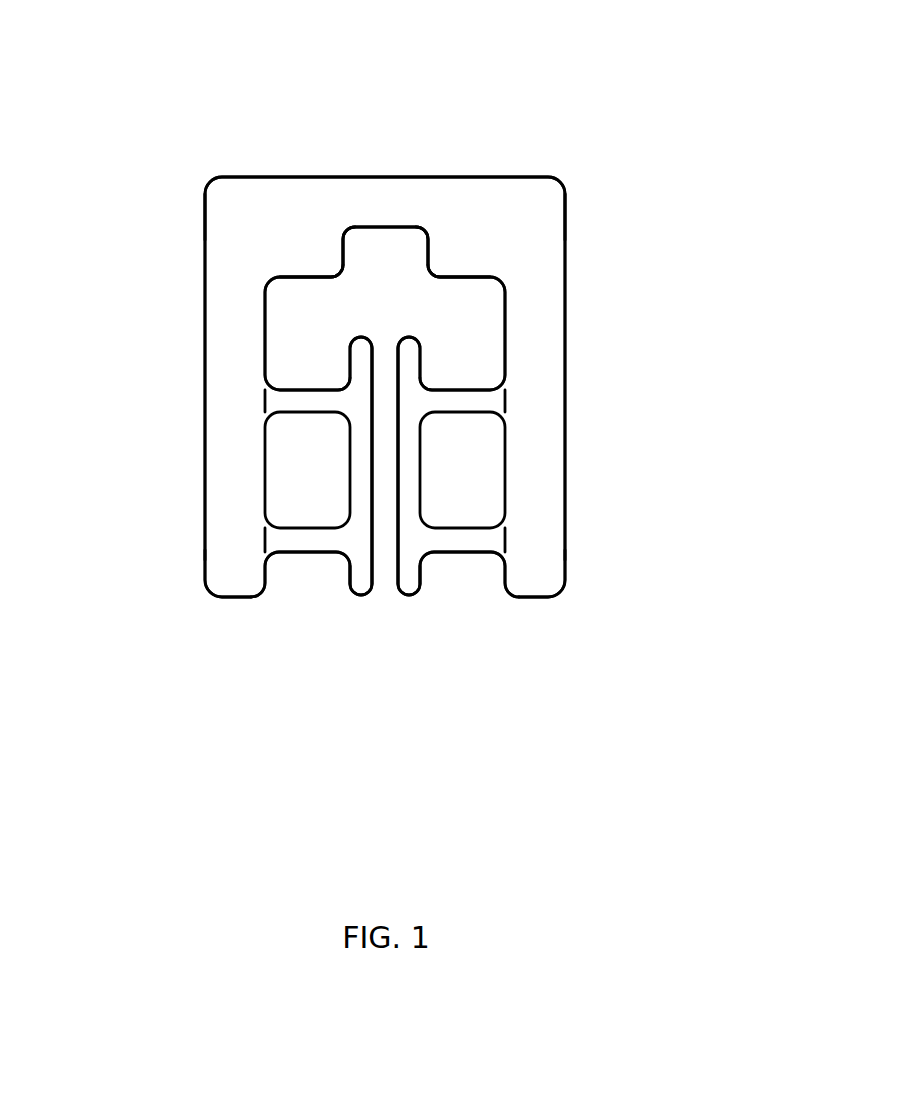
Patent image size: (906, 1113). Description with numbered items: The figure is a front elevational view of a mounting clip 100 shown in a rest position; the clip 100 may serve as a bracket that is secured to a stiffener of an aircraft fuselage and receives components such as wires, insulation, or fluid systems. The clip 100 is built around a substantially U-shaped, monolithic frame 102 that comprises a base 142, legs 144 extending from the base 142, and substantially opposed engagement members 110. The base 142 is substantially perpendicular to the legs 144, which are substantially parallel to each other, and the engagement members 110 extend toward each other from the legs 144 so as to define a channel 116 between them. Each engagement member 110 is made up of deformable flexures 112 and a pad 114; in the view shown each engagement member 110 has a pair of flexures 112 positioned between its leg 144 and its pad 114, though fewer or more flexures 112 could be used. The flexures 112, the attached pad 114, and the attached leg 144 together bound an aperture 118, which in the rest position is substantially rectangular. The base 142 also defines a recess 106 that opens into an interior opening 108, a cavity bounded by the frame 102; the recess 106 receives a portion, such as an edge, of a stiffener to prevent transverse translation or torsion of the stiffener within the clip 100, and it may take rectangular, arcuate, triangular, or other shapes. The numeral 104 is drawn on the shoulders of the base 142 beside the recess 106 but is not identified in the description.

The clip 100 is at (548, 90).
The frame 102 is at (220, 153).
The shoulder portions 104 is at (450, 262).
The recess 106 is at (363, 261).
The interior opening 108 is at (408, 296).
The engagement members 110 is at (270, 597).
The deformable flexures 112 is at (463, 540).
The pad 114 is at (408, 352).
The channel 116 is at (383, 505).
The aperture 118 is at (285, 488).
The base 142 is at (460, 203).
The legs 144 is at (540, 583).